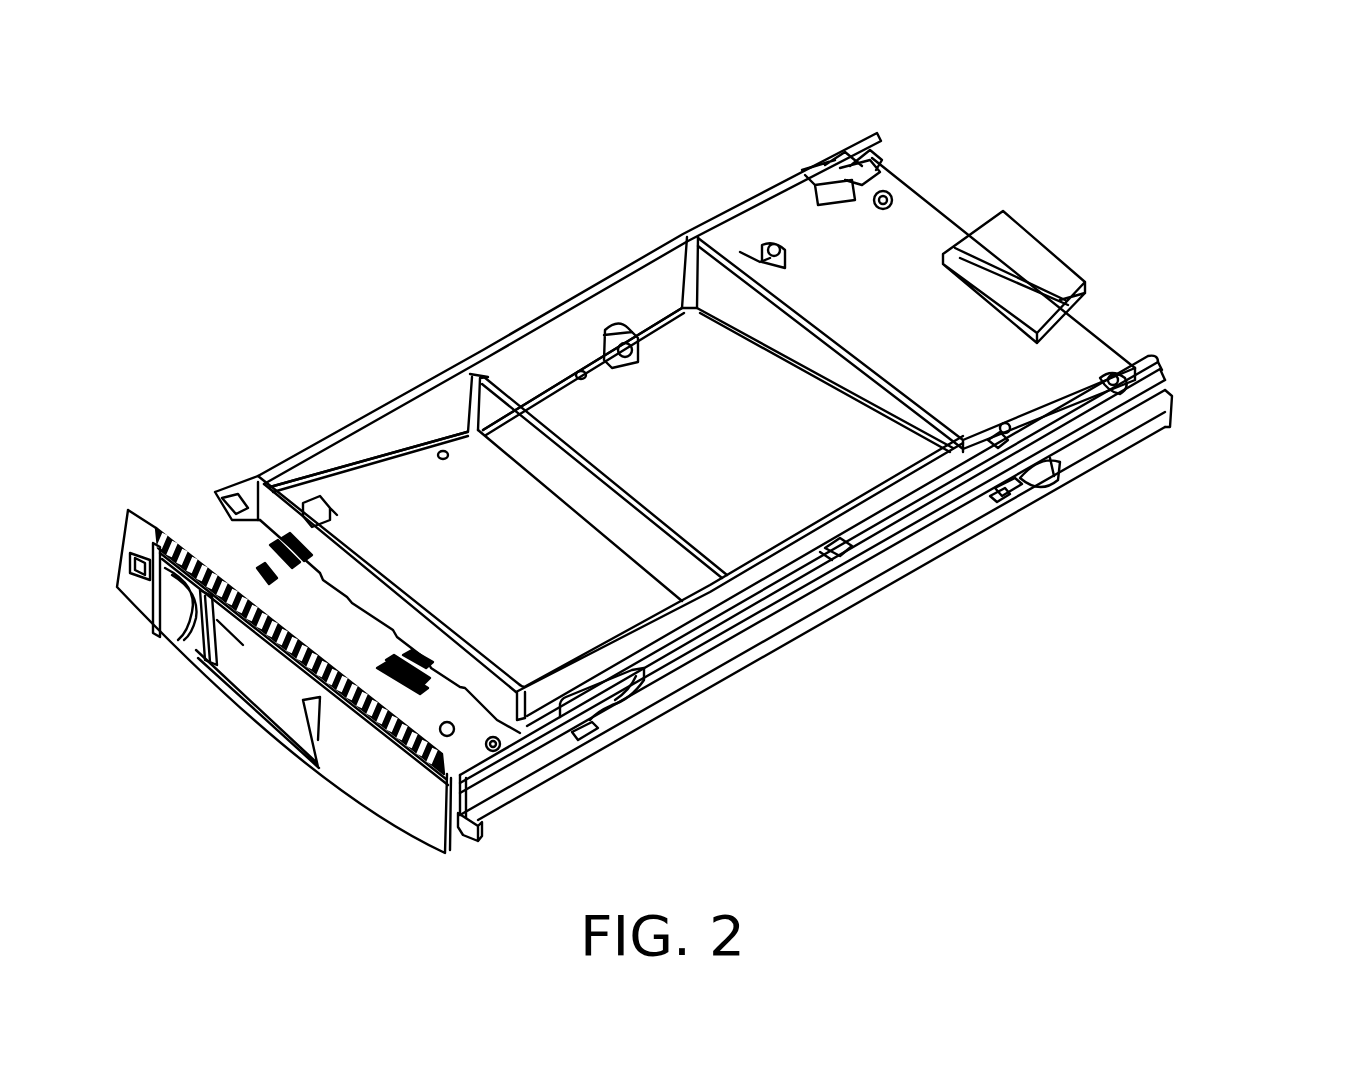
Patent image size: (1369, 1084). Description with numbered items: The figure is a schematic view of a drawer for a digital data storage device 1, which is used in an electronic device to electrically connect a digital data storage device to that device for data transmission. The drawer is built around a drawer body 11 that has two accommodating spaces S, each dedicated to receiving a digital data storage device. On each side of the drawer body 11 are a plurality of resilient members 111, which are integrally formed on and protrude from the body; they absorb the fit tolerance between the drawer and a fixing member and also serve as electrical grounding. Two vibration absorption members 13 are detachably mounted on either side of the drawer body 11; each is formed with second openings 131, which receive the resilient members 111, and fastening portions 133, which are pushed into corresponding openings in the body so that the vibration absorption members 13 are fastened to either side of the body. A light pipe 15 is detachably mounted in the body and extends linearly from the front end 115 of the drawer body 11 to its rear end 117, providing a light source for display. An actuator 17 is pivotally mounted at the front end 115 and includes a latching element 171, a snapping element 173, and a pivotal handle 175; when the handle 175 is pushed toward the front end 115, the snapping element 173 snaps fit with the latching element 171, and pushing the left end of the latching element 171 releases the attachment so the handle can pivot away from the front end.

The drawer for a digital data storage device 1 is at (1000, 172).
The drawer body 11 is at (1092, 358).
The vibration absorption member 13 is at (1117, 428).
The light pipe 15 is at (870, 160).
The actuator 17 is at (67, 678).
The resilient member 111 is at (1030, 478).
The front end 115 is at (517, 802).
The rear end 117 is at (1168, 421).
The second opening 131 is at (1055, 468).
The fastening portion 133 is at (1112, 372).
The latching element 171 is at (162, 640).
The snapping element 173 is at (224, 668).
The pivotal handle 175 is at (272, 740).
The accommodating space S is at (433, 480).